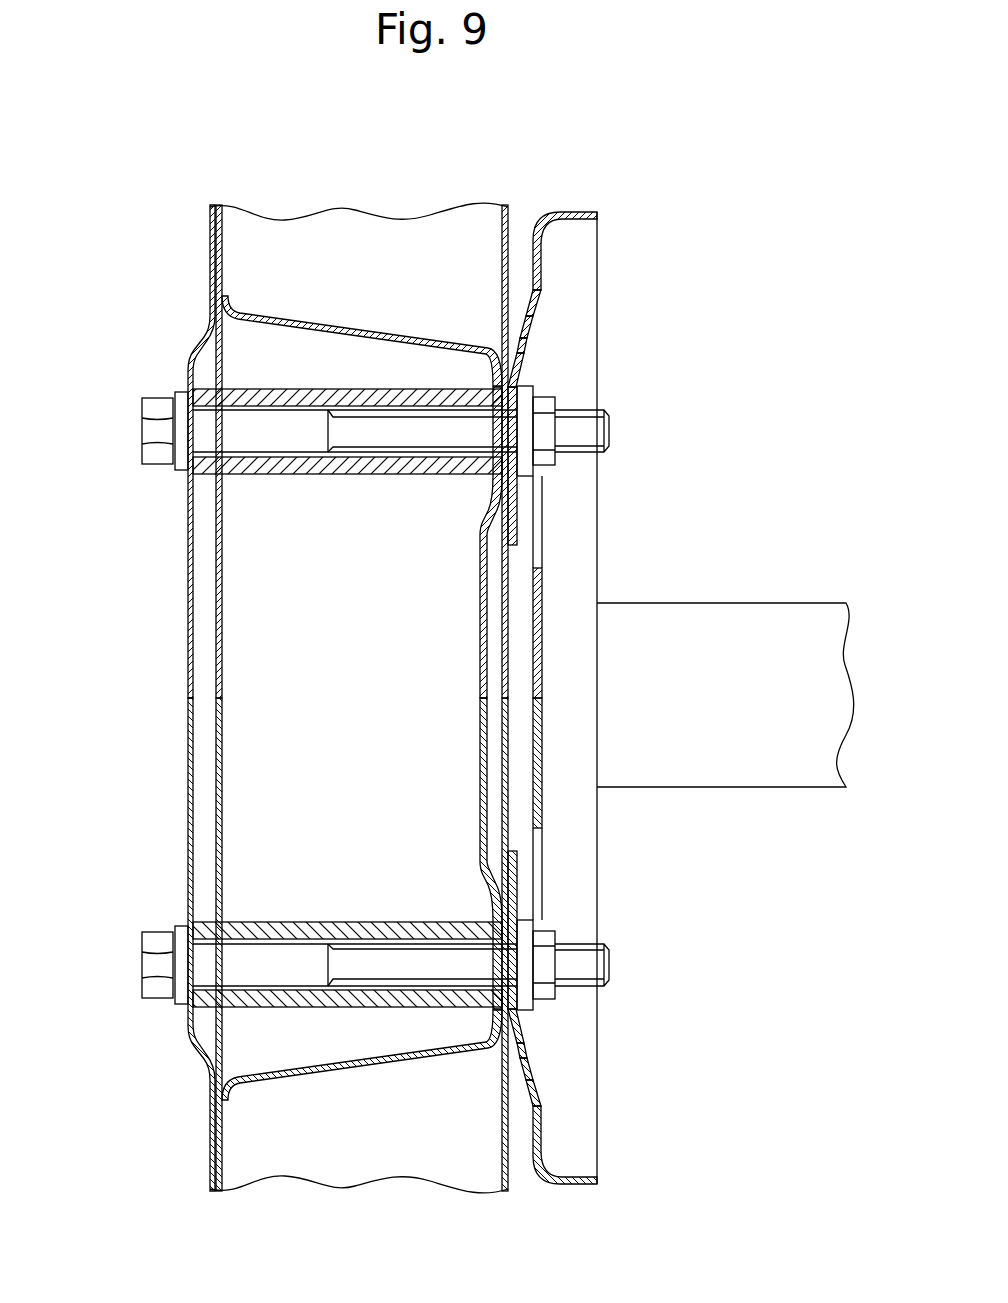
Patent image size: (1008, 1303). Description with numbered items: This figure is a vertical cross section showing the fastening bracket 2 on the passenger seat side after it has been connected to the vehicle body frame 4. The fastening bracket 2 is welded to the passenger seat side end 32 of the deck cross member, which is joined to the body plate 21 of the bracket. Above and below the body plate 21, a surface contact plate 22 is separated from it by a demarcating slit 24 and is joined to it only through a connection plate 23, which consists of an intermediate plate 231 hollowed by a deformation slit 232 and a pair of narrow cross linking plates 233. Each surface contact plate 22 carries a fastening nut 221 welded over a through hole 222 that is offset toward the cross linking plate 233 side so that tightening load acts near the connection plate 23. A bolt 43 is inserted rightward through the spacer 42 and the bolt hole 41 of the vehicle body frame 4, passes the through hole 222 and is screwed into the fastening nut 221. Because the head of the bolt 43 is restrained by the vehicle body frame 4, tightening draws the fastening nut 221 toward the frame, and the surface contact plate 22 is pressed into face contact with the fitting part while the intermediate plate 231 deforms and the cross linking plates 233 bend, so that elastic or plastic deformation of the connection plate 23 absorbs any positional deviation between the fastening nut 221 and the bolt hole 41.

The fastening bracket 2 is at (564, 238).
The vehicle body frame 4 is at (190, 699).
The body plate 21 is at (543, 628).
The surface contact plate 22 is at (515, 493).
The connection plate 23 is at (639, 696).
The demarcating slit 24 is at (503, 556).
The passenger seat side end 32 is at (662, 707).
The bolt hole 41 is at (497, 396).
The spacer 42 is at (323, 390).
The bolt 43 is at (146, 426).
The fastening nut 221 is at (530, 474).
The through hole 222 is at (548, 397).
The intermediate plate 231 is at (544, 308).
The deformation slit 232 is at (528, 334).
The cross linking plate 233 is at (540, 288).